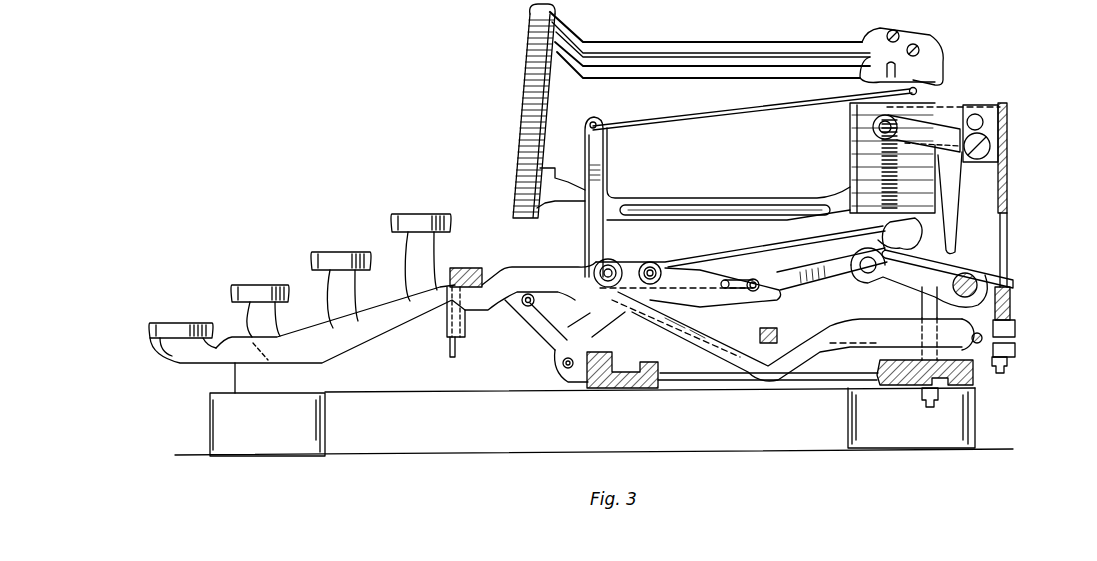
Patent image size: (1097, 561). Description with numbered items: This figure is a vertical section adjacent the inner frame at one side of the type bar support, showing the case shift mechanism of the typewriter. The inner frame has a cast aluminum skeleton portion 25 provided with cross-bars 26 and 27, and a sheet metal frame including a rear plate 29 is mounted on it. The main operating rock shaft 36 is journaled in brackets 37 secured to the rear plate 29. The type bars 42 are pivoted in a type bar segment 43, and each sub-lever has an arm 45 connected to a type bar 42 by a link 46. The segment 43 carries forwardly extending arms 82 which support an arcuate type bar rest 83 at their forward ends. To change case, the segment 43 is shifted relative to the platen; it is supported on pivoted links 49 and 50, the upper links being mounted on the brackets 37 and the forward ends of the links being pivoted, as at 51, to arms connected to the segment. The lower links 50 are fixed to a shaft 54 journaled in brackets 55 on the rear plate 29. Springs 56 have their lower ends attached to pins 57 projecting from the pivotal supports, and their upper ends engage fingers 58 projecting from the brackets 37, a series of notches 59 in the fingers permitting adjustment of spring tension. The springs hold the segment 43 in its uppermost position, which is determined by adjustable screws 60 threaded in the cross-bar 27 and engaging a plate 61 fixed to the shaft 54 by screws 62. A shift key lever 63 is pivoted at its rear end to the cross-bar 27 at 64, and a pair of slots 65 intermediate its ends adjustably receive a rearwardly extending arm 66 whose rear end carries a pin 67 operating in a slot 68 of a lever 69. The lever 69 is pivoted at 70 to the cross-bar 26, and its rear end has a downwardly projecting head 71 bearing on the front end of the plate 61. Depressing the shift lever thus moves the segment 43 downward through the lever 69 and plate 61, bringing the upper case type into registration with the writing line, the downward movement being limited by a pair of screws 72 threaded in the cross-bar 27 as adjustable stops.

The skeleton portion 25 is at (717, 375).
The cross-bar 26 is at (623, 390).
The cross-bar 27 is at (893, 387).
The rear plate 29 is at (1008, 184).
The main operating rock shaft 36 is at (983, 122).
The brackets 37 is at (990, 106).
The type bars 42 is at (660, 67).
The type bar segment 43 is at (927, 67).
The arm 45 is at (603, 158).
The link 46 is at (712, 112).
The pivoted links 49 is at (932, 135).
The pivoted links 50 is at (905, 270).
The pivot 51 is at (853, 133).
The shaft 54 is at (997, 280).
The brackets 55 is at (985, 265).
The springs 56 is at (853, 157).
The pins 57 is at (866, 272).
The fingers 58 is at (892, 121).
The notches 59 is at (913, 96).
The adjustable screws 60 is at (1010, 305).
The plate 61 is at (1013, 282).
The screws 62 is at (963, 266).
The shift key lever 63 is at (697, 332).
The pivot 64 is at (1005, 372).
The slots 65 is at (612, 262).
The arm 66 is at (688, 258).
The pin 67 is at (835, 268).
The slot 68 is at (748, 280).
The lever 69 is at (778, 284).
The pivot 70 is at (560, 370).
The head 71 is at (925, 243).
The screws 72 is at (925, 306).
The arms 82 is at (697, 46).
The type bar rest 83 is at (530, 112).